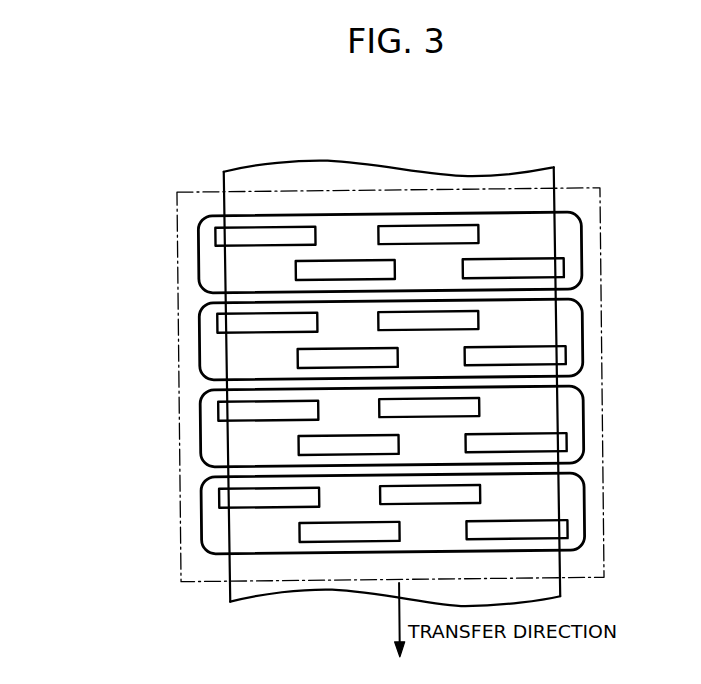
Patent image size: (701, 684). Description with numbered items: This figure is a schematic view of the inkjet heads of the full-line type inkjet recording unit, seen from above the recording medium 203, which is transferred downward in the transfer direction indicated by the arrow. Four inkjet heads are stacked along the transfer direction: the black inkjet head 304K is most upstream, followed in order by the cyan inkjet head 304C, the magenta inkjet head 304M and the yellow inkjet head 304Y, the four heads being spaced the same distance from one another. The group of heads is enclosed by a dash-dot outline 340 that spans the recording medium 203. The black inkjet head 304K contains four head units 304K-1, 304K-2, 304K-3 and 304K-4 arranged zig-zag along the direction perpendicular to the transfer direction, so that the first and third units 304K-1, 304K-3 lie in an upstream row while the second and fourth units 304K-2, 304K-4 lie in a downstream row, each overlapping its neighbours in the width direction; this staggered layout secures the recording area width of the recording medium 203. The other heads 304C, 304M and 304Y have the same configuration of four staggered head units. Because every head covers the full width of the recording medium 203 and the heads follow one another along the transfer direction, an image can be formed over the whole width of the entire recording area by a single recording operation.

The recording medium 203 is at (422, 171).
The head unit 340 is at (603, 382).
The inkjet head 304K is at (395, 208).
The inkjet head 304C is at (199, 338).
The inkjet head 304M is at (199, 430).
The inkjet head 304Y is at (199, 517).
The head unit 304K-1 is at (251, 245).
The head unit 304K-2 is at (344, 259).
The head unit 304K-3 is at (480, 237).
The head unit 304K-4 is at (565, 270).